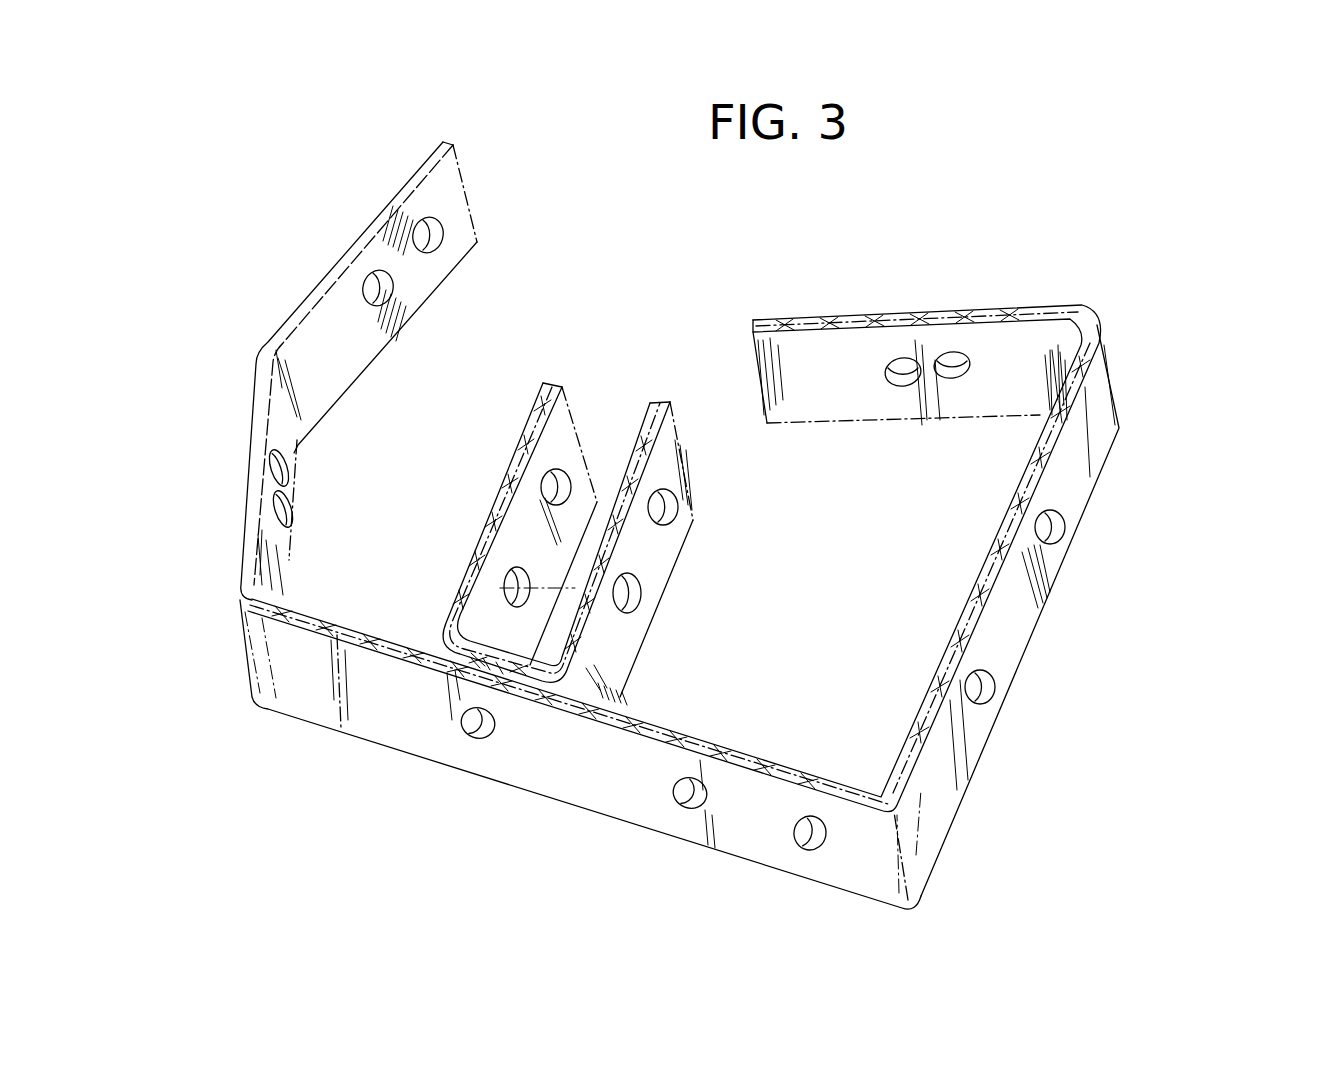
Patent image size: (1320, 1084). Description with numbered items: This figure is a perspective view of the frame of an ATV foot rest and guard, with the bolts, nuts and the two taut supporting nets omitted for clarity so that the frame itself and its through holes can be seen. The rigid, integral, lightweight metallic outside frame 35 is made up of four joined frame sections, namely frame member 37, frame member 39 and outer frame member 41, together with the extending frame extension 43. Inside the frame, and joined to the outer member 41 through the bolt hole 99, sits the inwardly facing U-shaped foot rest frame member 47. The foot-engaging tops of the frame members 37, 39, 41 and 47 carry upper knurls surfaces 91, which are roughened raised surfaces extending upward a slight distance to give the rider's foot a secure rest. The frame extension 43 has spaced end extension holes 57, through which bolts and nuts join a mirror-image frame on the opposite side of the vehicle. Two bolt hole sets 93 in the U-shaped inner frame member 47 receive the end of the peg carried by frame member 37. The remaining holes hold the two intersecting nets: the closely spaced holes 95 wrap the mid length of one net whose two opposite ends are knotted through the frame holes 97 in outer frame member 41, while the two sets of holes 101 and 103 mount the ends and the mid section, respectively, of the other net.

The outside frame 35 is at (743, 525).
The frame member 37 is at (1043, 305).
The frame member 39 is at (1000, 647).
The outer frame member 41 is at (607, 777).
The frame extension 43 is at (352, 356).
The U-shaped foot rest frame member 47 is at (660, 573).
The spaced end extension holes 57 is at (380, 292).
The upper knurls surfaces 91 is at (313, 617).
The bolt hole sets 93 is at (510, 580).
The closely spaced holes 95 is at (943, 373).
The frame holes 97 is at (803, 833).
The bolt hole 99 is at (470, 728).
The set of holes 101 is at (1053, 537).
The set of holes 103 is at (285, 472).